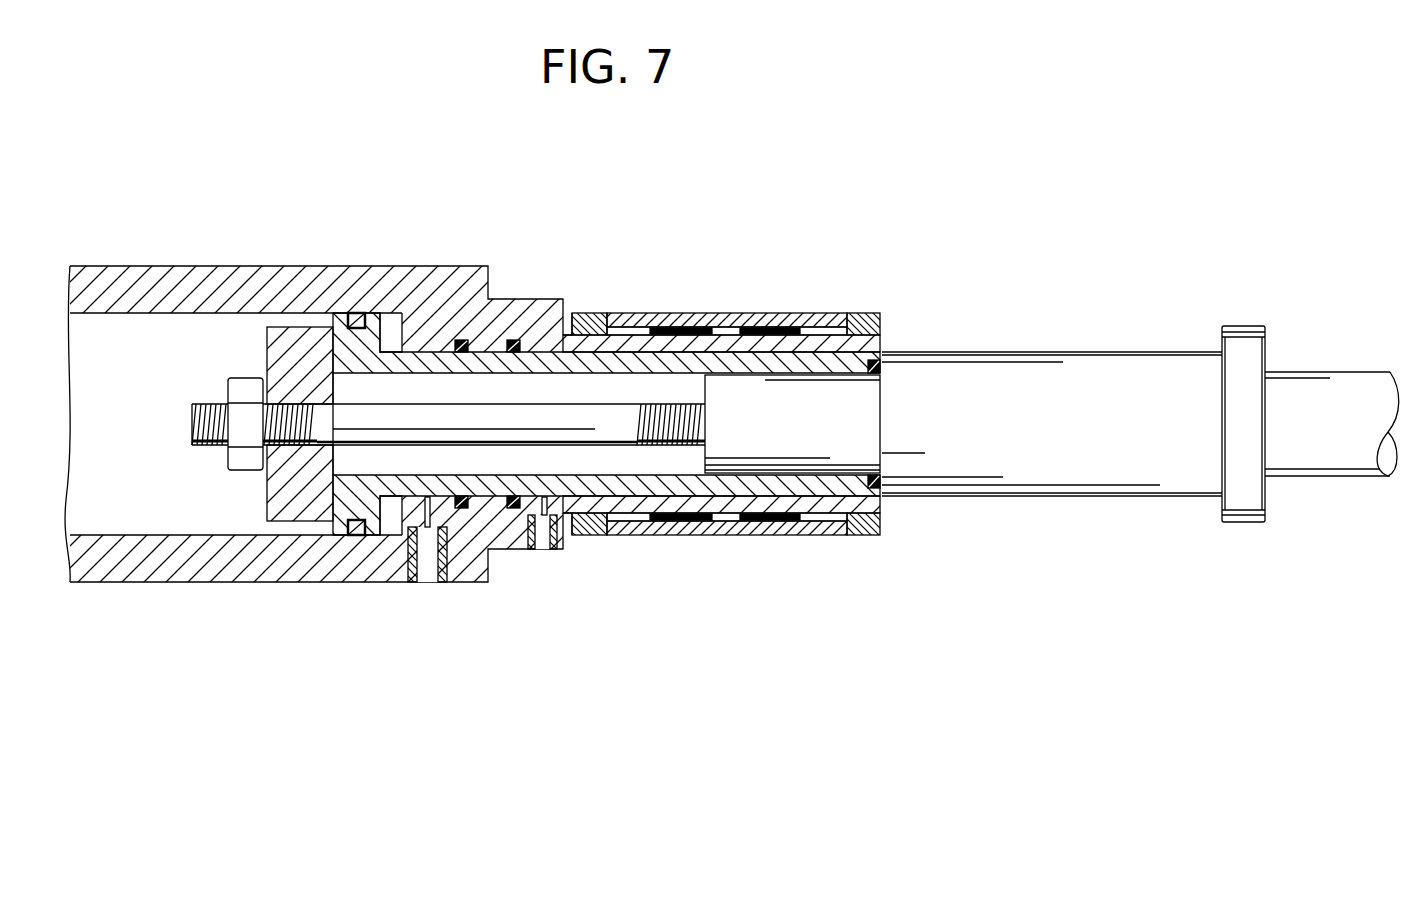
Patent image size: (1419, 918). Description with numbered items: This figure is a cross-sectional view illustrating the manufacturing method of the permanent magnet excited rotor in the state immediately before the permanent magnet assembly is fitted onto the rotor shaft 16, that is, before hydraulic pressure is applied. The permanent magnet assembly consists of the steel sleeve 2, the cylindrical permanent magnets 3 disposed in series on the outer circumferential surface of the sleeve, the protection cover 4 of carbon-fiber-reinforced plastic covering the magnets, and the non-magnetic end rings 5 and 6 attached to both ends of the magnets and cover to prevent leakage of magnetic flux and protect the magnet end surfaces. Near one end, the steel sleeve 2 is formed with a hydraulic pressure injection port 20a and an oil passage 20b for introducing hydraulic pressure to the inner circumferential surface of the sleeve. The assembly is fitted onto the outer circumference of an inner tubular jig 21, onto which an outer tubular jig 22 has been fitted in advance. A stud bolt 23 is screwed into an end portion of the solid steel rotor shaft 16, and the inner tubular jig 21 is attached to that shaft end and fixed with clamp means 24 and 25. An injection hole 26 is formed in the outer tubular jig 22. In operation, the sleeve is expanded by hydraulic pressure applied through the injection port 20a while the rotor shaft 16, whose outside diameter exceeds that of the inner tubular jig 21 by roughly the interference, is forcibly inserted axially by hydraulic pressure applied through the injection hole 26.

The steel sleeve 2 is at (795, 333).
The permanent magnets 3 is at (723, 332).
The protection cover 4 is at (682, 315).
The end ring 5 is at (860, 315).
The end ring 6 is at (583, 313).
The rotor shaft 16 is at (1110, 362).
The hydraulic pressure injection port 20a is at (540, 549).
The oil passage 20b is at (577, 520).
The inner tubular jig 21 is at (428, 357).
The outer tubular jig 22 is at (306, 270).
The stud bolt 23 is at (192, 410).
The clamp means 24 is at (300, 505).
The clamp means 25 is at (247, 378).
The injection hole 26 is at (432, 572).